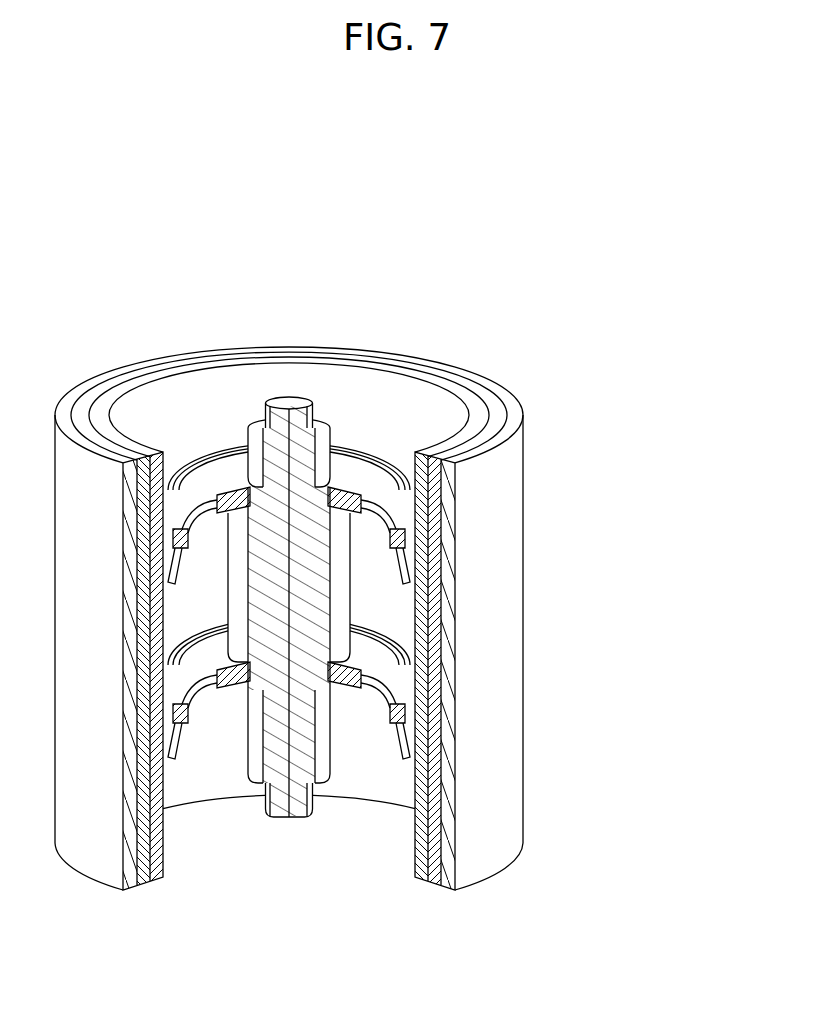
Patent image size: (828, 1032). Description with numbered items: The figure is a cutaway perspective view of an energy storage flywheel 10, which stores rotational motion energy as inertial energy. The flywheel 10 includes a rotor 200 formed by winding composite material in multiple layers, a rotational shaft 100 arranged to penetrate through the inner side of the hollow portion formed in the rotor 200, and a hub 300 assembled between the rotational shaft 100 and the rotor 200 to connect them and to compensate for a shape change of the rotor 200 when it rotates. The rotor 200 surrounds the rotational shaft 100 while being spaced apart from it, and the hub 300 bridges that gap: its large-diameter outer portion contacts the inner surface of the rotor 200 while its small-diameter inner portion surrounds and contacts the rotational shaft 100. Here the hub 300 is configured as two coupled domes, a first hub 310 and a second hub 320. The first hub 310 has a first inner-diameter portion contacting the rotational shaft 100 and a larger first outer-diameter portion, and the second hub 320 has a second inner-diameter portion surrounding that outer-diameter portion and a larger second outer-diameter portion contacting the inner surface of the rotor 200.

The energy storage flywheel 10 is at (248, 306).
The rotational shaft 100 is at (308, 627).
The rotor 200 is at (427, 693).
The hub 300 is at (655, 510).
The first hub 310 is at (398, 507).
The second hub 320 is at (410, 557).